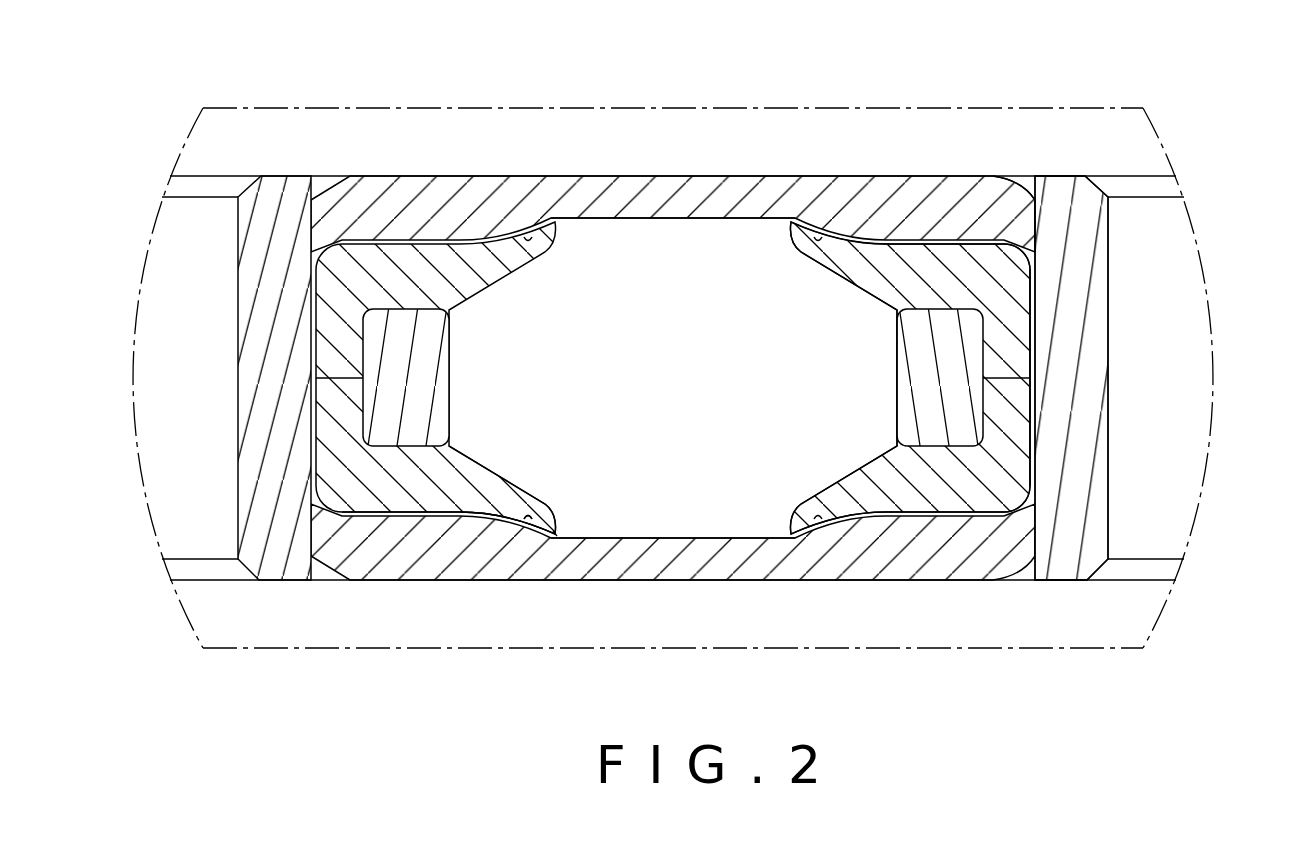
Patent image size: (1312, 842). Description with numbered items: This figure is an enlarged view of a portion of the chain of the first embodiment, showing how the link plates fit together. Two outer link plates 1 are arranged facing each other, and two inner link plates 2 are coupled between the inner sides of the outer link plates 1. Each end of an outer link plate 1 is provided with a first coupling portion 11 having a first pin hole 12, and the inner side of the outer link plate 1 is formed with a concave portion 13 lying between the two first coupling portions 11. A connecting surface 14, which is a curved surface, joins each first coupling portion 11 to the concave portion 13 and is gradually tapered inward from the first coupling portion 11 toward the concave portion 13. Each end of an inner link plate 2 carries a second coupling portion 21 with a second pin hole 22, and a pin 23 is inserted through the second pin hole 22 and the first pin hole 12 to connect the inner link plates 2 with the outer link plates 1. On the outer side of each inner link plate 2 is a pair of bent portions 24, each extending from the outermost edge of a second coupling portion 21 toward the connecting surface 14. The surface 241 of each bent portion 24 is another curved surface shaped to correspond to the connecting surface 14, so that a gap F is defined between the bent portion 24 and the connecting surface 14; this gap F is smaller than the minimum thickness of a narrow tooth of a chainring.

The outer link plate 1 is at (735, 188).
The first coupling portion 11 is at (1015, 210).
The first pin hole 12 is at (1037, 223).
The concave portion 13 is at (643, 214).
The inner link plate 2 is at (940, 272).
The second coupling portion 21 is at (1007, 307).
The second pin hole 22 is at (1037, 345).
The pin 23 is at (1085, 407).
The bent portion 24 is at (483, 483).
The connecting surface 14 is at (502, 522).
The surface of bent portion 241 is at (528, 519).
The gap F is at (557, 538).